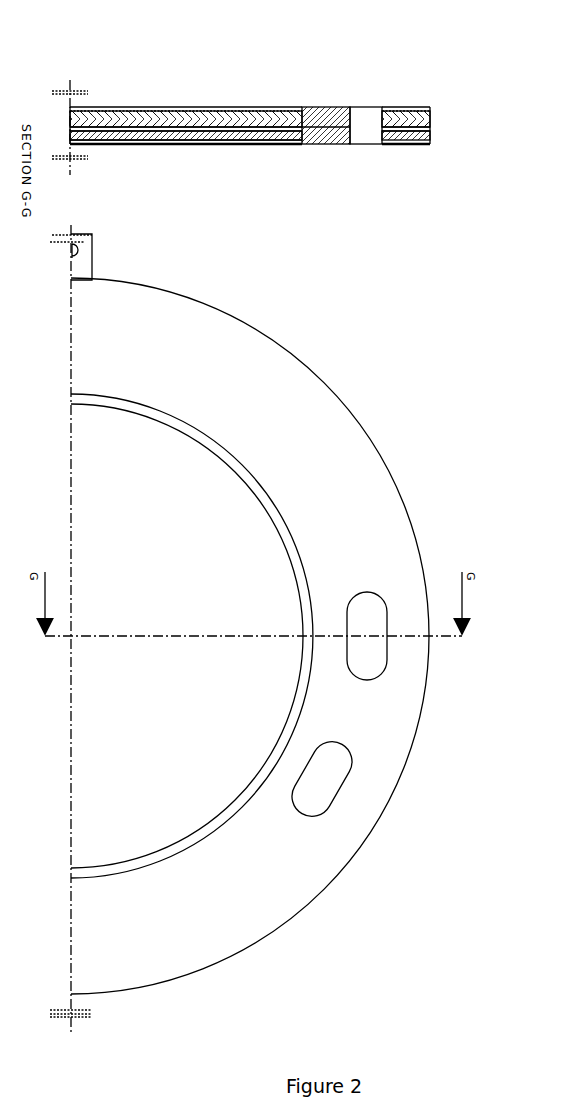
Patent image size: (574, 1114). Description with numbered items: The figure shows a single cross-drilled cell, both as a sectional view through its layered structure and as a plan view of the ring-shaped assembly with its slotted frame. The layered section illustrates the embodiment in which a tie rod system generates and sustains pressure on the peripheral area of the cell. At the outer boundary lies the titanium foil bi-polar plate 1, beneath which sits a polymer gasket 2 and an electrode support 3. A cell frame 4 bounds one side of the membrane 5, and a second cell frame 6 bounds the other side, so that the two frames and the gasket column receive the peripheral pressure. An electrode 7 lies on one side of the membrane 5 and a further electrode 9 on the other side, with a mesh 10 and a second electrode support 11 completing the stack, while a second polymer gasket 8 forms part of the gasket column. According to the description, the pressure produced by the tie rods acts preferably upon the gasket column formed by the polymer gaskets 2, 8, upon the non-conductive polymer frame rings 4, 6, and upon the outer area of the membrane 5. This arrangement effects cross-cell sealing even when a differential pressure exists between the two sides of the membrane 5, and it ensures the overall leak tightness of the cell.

The titanium foil bi-polar plate 1 is at (431, 104).
The polymer gasket 2 is at (431, 110).
The electrode support 3 is at (292, 110).
The cell frame 4 is at (431, 118).
The membrane 5 is at (431, 127).
The cell frame 6 is at (431, 136).
The electrode 7 is at (158, 134).
The polymer gasket 8 is at (431, 143).
The electrode 9 is at (90, 106).
The mesh 10 is at (230, 139).
The electrode support 11 is at (290, 145).